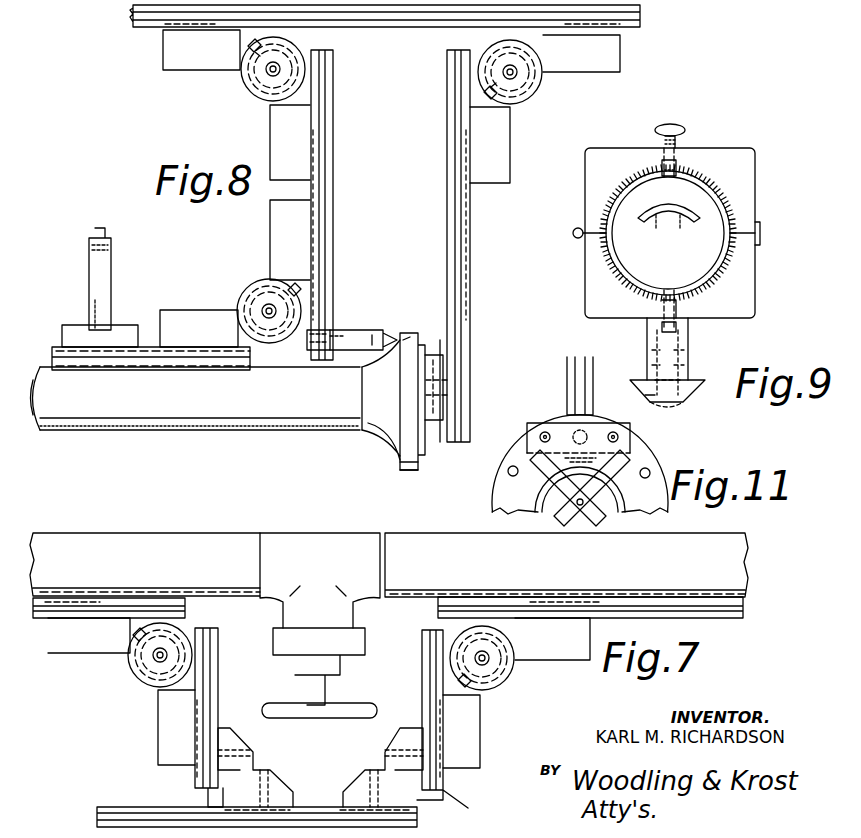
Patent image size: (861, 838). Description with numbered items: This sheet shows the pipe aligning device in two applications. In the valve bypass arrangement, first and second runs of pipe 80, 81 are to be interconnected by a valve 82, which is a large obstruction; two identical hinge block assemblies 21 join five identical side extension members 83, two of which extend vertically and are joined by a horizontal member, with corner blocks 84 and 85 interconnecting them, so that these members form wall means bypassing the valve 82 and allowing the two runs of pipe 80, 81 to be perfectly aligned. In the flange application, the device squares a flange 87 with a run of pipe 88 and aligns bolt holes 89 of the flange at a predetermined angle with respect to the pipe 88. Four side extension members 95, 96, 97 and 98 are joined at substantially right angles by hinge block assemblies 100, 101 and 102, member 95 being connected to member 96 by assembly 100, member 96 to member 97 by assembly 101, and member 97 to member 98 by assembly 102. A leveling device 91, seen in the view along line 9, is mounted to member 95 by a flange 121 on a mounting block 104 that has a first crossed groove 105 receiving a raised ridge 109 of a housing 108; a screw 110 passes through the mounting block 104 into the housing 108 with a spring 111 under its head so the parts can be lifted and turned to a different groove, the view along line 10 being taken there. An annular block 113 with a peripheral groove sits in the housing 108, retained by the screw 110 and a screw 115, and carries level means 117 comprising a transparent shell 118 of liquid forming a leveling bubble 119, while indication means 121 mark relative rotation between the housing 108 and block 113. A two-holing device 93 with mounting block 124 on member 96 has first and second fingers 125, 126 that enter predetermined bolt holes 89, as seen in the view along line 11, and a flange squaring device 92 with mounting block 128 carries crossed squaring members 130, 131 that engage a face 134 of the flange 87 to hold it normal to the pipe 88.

In FIG. 8, the side extension member 97 is at (383, 28).
In FIG. 8, the hinge block assembly 101 is at (246, 81).
In FIG. 8, the hinge block assembly 102 is at (540, 88).
In FIG. 8, the side extension member 96 is at (326, 198).
In FIG. 8, the side extension member 98 is at (447, 196).
In FIG. 8, the hinge block assembly 100 is at (248, 285).
In FIG. 8, the section line 9— 9 is at (40, 336).
In FIG. 8, the leveling device 91 is at (112, 260).
In FIG. 8, the side extension member 95 is at (160, 325).
In FIG. 8, the run of pipe 88 is at (196, 431).
In FIG. 8, the flange 87 is at (378, 442).
In FIG. 8, the flange squaring device 92 is at (440, 358).
In FIG. 8, the mounting block 128 is at (438, 440).
In FIG. 8, the face of the flange 134 is at (420, 468).
In FIG. 8, the mounting block 124 is at (332, 300).
In FIG. 8, the two-holing device 93 is at (350, 328).
In FIG. 8, the first finger 125 is at (386, 328).
In FIG. 11, the first finger 125 is at (547, 432).
In FIG. 8, the section line 11— 11 is at (425, 340).
In FIG. 9, the section line 10— 10 is at (670, 124).
In FIG. 9, the housing 108 is at (727, 160).
In FIG. 9, the annular block 113 is at (708, 255).
In FIG. 9, the screw 115 is at (680, 126).
In FIG. 9, the flange / indication means 121 is at (667, 170).
In FIG. 9, the leveling bubble 119 is at (670, 200).
In FIG. 9, the transparent shell 118 is at (654, 216).
In FIG. 9, the level means 117 is at (686, 215).
In FIG. 9, the raised ridge 109 is at (665, 314).
In FIG. 9, the first crossed groove 105 is at (680, 328).
In FIG. 9, the mounting block 104 is at (690, 373).
In FIG. 9, the screw 110 is at (688, 408).
In FIG. 9, the spring 111 is at (652, 396).
In FIG. 11, the bolt holes 89 is at (512, 466).
In FIG. 11, the second finger 126 is at (616, 432).
In FIG. 11, the crossed squaring member 130 is at (562, 518).
In FIG. 11, the crossed squaring member 131 is at (602, 526).
In FIG. 7, the first run of pipe 80 is at (148, 534).
In FIG. 7, the valve 82 is at (328, 542).
In FIG. 7, the second run of pipe 81 is at (446, 536).
In FIG. 7, the side extension member 83 is at (38, 620).
In FIG. 7, the hinge block assembly 21 is at (147, 688).
In FIG. 7, the corner block 85 is at (240, 778).
In FIG. 7, the corner block 84 is at (378, 774).